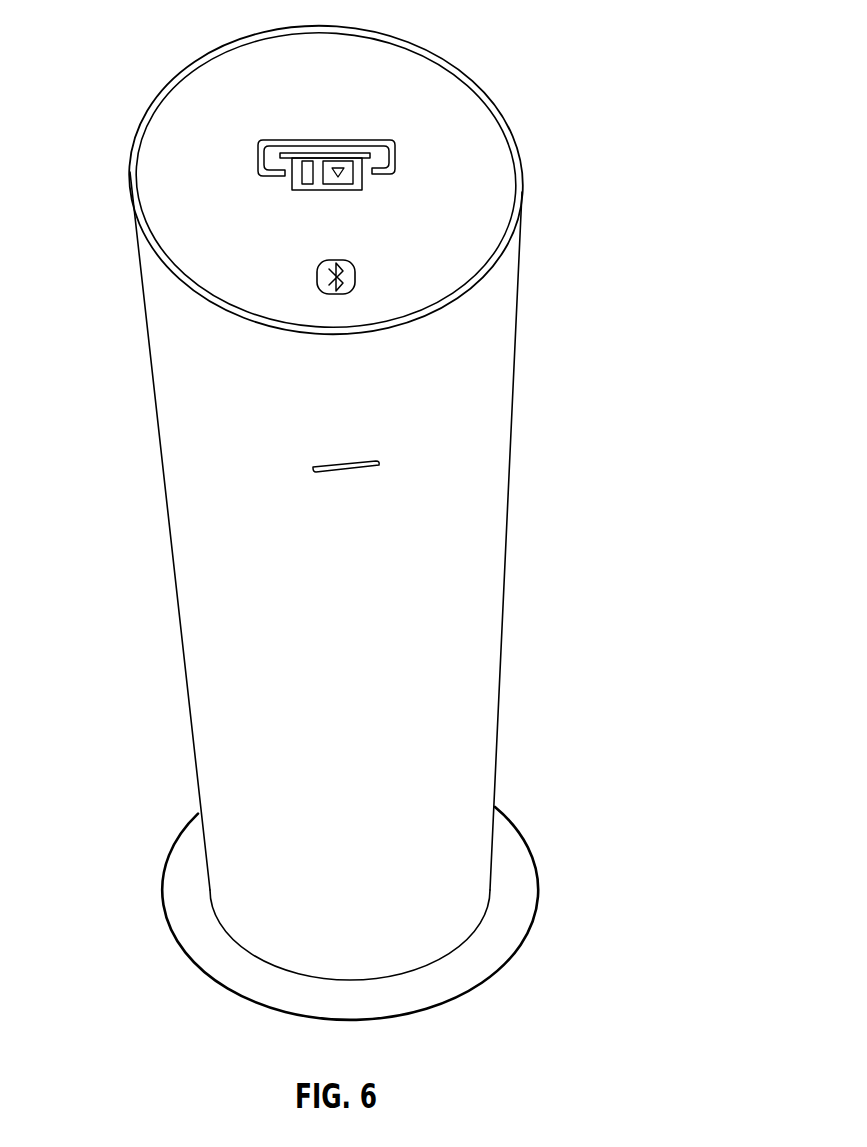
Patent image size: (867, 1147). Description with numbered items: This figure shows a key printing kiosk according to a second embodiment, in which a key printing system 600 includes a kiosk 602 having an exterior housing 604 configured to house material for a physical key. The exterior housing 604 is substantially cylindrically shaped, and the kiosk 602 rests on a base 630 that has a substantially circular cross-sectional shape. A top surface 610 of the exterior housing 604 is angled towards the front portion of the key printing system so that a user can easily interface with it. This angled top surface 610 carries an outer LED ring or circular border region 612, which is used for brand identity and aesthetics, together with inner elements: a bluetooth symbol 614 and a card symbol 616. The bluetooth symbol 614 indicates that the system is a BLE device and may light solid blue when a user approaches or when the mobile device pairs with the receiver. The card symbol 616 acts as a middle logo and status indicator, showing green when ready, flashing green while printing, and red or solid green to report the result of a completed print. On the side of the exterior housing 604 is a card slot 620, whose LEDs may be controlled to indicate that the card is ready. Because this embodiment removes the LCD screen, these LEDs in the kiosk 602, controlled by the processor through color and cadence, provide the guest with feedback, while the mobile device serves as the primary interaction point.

The key printing system 600 is at (618, 37).
The kiosk 602 is at (509, 713).
The exterior housing 604 is at (207, 640).
The top surface 610 is at (205, 243).
The outer LED ring 612 is at (143, 216).
The bluetooth symbol 614 is at (324, 287).
The card symbol 616 is at (402, 176).
The card slot 620 is at (363, 471).
The base 630 is at (181, 898).